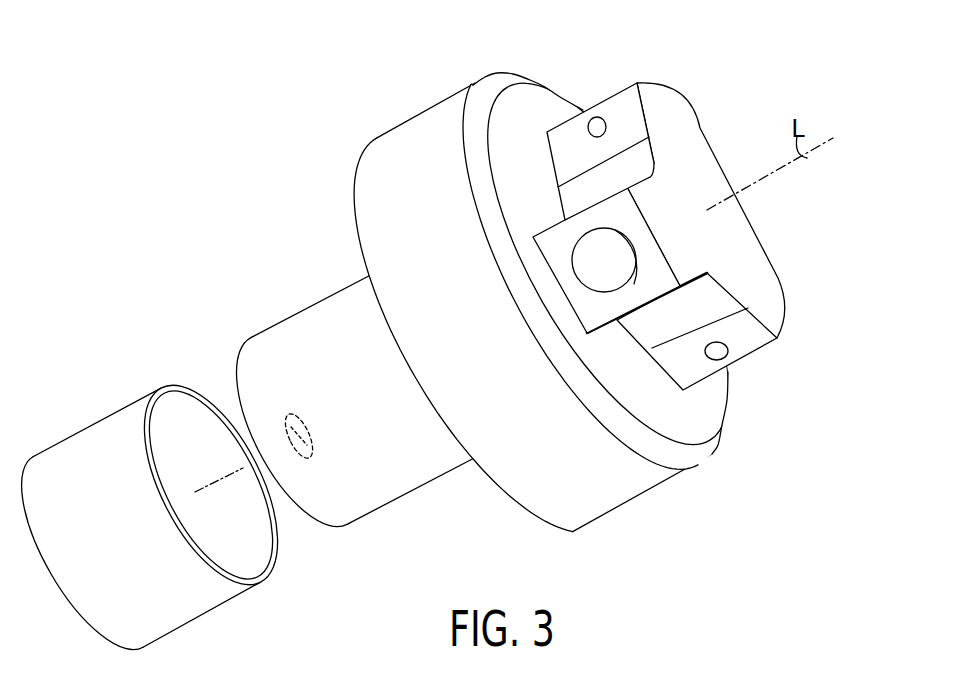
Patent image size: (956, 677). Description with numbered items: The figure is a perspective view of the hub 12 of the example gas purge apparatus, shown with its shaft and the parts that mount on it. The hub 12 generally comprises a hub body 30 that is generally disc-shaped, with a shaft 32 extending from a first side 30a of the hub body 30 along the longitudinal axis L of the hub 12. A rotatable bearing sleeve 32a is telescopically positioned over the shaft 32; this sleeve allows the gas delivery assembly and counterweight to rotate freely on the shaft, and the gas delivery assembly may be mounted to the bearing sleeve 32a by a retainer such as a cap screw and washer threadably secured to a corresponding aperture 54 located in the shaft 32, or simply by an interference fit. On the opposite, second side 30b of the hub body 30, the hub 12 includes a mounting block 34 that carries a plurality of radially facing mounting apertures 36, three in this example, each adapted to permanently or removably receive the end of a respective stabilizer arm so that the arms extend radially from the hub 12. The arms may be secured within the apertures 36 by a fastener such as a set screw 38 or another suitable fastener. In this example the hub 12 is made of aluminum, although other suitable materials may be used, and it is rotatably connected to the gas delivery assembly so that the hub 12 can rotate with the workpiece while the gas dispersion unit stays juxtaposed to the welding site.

The hub 12 is at (543, 298).
The hub body 30 is at (617, 488).
The first side of hub body 30a is at (518, 507).
The second side of hub body 30b is at (705, 405).
The shaft 32 is at (305, 347).
The rotatable bearing sleeve 32a is at (96, 456).
The mounting block 34 is at (670, 92).
The mounting apertures 36 is at (638, 257).
The set screw 38 is at (597, 110).
The aperture 54 is at (301, 461).